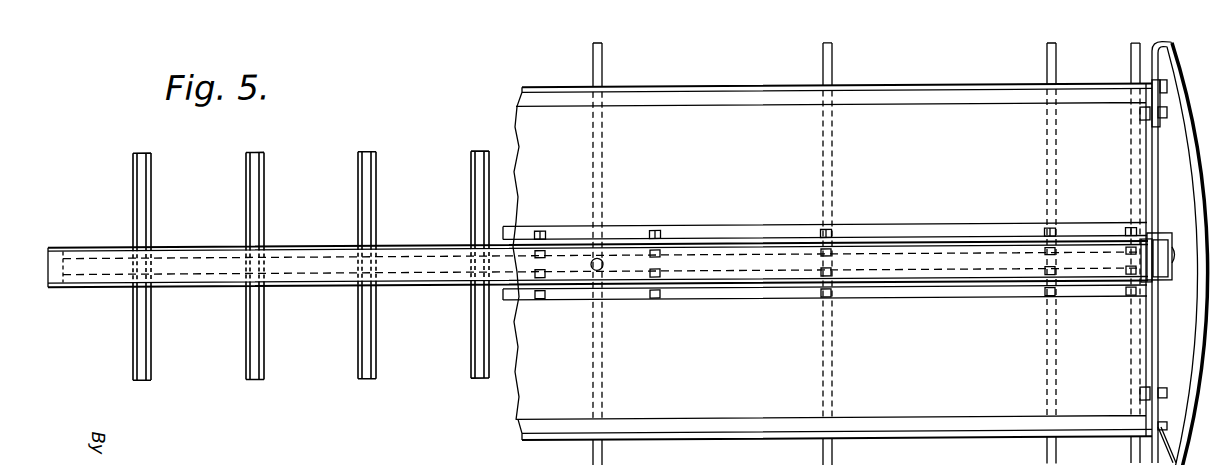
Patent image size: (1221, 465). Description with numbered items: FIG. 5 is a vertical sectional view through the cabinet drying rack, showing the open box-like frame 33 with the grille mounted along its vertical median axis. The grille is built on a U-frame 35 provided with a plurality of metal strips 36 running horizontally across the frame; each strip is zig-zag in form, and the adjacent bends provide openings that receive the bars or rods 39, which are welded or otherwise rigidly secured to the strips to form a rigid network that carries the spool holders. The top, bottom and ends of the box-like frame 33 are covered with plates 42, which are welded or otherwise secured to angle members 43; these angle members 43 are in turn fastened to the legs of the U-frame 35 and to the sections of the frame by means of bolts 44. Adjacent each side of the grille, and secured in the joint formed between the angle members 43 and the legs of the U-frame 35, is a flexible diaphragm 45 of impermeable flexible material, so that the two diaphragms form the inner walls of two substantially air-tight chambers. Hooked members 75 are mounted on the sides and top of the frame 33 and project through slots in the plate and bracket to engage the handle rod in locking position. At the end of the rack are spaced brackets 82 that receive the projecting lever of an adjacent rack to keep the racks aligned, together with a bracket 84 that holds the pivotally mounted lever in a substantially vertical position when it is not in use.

The box-like frame 33 is at (741, 85).
The U-frame 35 is at (218, 239).
The metal strips 36 is at (325, 266).
The bars or rods 39 is at (474, 191).
The plates 42 is at (829, 261).
The angle members 43 is at (573, 219).
The bolts 44 is at (672, 221).
The flexible diaphragm 45 is at (925, 224).
The hooked members 75 is at (593, 72).
The brackets 82 is at (1160, 91).
The bracket 84 is at (1166, 247).